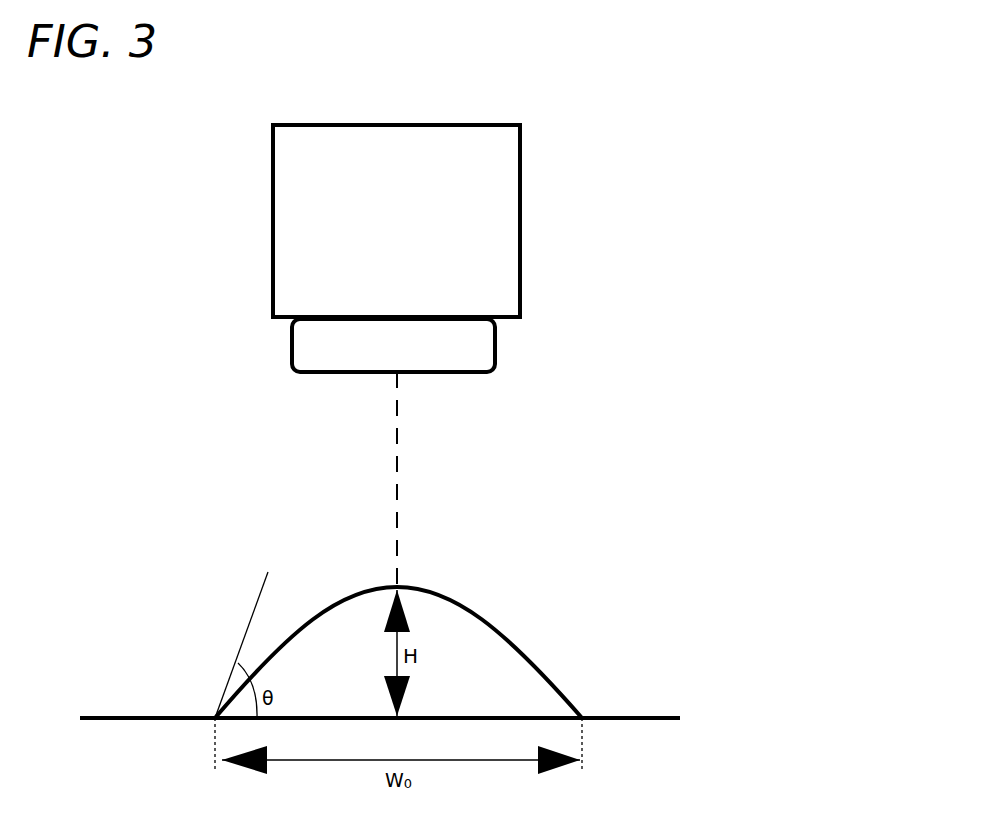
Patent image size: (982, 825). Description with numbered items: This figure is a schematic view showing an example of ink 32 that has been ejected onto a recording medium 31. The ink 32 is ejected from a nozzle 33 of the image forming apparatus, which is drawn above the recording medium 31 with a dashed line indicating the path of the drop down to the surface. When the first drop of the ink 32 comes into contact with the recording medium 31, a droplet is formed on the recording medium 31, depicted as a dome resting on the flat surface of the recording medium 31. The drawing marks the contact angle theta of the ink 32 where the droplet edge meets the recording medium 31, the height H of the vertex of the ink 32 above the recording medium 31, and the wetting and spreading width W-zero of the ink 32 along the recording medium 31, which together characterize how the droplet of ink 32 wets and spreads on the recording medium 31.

The recording medium 31 is at (653, 716).
The ink 32 is at (508, 628).
The nozzle 33 is at (520, 316).